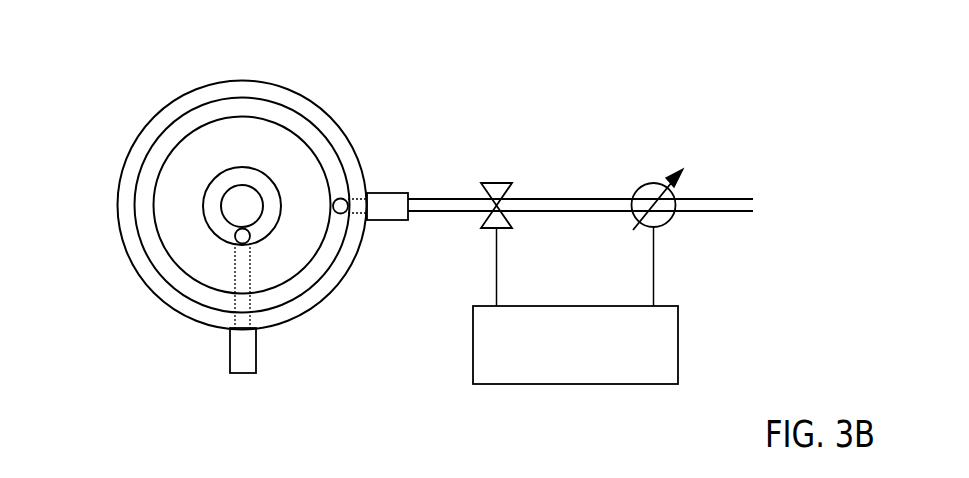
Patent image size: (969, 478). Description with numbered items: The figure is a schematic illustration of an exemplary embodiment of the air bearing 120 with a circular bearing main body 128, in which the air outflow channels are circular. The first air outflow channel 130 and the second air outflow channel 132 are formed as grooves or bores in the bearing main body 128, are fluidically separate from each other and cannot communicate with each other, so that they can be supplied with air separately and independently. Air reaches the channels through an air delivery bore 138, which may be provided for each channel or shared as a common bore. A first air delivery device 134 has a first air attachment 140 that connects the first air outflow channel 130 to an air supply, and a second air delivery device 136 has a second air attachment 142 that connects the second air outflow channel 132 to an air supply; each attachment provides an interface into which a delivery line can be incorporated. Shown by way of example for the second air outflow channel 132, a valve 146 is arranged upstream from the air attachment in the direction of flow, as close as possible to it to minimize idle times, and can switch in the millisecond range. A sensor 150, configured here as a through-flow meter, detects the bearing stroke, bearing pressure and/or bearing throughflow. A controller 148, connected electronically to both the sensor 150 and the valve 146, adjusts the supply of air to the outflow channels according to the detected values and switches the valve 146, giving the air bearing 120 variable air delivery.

The air bearing 120 is at (139, 90).
The bearing main body 128 is at (120, 136).
The first air outflow channel 130 is at (251, 177).
The second air outflow channel 132 is at (215, 113).
The first air delivery device 134 is at (248, 278).
The second air delivery device 136 is at (357, 197).
The air delivery bore 138 is at (291, 221).
The first air attachment 140 is at (243, 376).
The second air attachment 142 is at (390, 213).
The valve 146 is at (496, 182).
The controller 148 is at (595, 353).
The sensor 150 is at (652, 182).